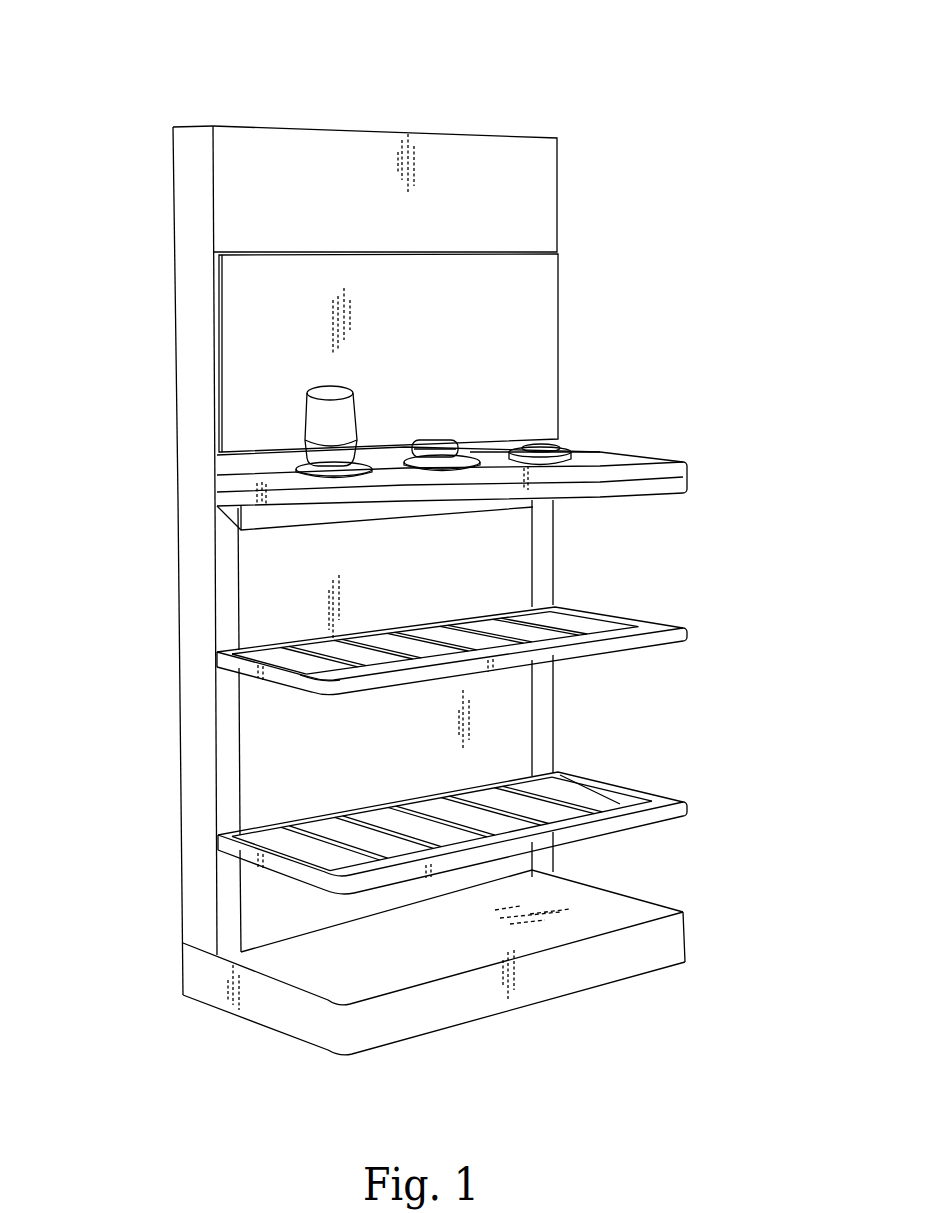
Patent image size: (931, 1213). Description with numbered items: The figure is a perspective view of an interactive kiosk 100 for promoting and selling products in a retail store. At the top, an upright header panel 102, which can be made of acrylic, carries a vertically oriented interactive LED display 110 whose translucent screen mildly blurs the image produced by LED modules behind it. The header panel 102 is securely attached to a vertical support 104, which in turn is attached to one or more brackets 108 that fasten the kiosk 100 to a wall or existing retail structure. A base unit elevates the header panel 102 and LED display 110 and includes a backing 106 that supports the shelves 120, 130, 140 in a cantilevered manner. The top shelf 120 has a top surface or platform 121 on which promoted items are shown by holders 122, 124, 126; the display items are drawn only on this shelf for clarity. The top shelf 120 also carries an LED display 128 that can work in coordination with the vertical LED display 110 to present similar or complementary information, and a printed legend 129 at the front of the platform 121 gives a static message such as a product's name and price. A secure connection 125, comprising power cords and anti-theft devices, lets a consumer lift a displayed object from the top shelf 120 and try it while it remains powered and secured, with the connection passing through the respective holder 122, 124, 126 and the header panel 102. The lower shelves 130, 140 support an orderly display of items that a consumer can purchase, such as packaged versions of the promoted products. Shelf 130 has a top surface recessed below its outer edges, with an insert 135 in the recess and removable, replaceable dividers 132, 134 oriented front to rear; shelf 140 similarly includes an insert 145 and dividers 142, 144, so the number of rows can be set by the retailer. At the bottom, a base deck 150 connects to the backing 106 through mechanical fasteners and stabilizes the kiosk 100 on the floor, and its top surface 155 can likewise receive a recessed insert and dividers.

The interactive kiosk 100 is at (254, 71).
The upright header panel 102 is at (503, 216).
The vertical support 104 is at (173, 177).
The backing 106 is at (433, 761).
The bracket 108 is at (177, 347).
The interactive LED display 110 is at (443, 341).
The top shelf 120 is at (706, 480).
The top surface 121 is at (362, 478).
The holder 122 is at (262, 475).
The holder 124 is at (480, 438).
The secure connection 125 is at (214, 487).
The holder 126 is at (558, 446).
The LED display 128 is at (515, 462).
The printed legend 129 is at (420, 484).
The shelf 130 is at (708, 639).
The divider 132 is at (258, 652).
The divider 134 is at (562, 630).
The insert 135 is at (336, 660).
The shelf 140 is at (708, 809).
The divider 142 is at (258, 830).
The divider 144 is at (560, 815).
The insert 145 is at (606, 802).
The base deck 150 is at (275, 1012).
The top surface 155 is at (442, 951).